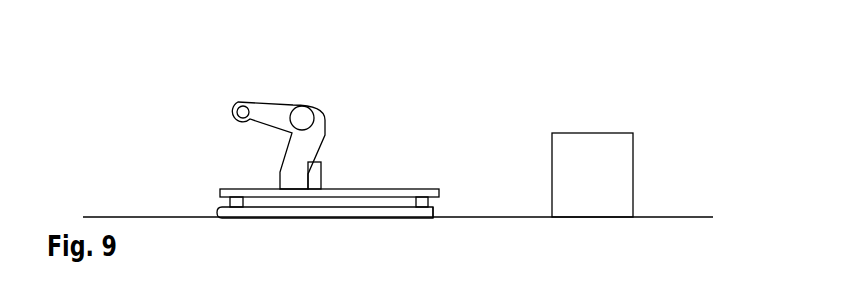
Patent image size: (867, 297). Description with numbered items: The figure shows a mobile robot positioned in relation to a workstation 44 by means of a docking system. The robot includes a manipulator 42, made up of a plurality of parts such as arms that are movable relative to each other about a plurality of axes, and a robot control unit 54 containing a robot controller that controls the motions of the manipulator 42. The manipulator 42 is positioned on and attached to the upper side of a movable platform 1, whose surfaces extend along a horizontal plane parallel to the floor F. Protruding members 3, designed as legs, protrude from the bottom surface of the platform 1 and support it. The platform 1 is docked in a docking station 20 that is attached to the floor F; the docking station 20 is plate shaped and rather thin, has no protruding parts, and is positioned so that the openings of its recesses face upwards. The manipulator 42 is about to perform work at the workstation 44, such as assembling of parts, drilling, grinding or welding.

The movable platform 1 is at (410, 207).
The protruding members 3 is at (435, 207).
The docking station 20 is at (288, 212).
The manipulator 42 is at (326, 105).
The workstation 44 is at (587, 148).
The robot control unit 54 is at (322, 170).
The floor F is at (411, 222).